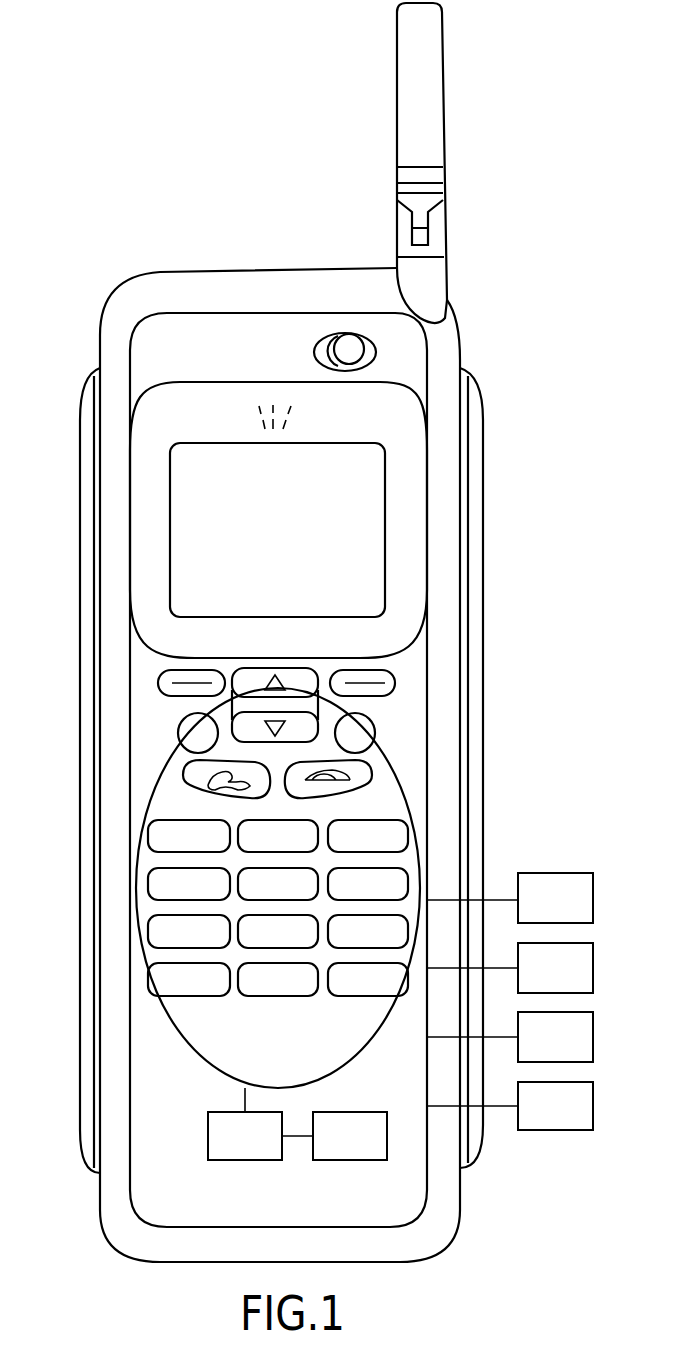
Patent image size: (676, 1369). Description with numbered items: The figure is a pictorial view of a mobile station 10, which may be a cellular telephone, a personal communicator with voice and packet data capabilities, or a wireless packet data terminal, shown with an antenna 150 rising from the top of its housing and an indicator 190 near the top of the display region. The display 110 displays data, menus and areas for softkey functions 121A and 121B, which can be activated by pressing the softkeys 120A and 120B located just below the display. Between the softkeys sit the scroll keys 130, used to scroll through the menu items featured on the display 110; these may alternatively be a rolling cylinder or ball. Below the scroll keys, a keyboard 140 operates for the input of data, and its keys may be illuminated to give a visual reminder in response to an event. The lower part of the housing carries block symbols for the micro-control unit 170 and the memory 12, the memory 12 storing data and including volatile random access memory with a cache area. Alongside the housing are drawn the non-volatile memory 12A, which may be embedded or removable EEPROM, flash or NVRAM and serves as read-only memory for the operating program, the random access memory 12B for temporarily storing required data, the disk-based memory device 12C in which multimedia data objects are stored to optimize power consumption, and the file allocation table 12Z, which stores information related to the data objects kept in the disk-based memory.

The mobile station 10 is at (130, 222).
The antenna 150 is at (272, 270).
The indicator 190 is at (288, 418).
The display 110 is at (170, 540).
The softkey function area 121A is at (186, 603).
The softkey function area 121B is at (372, 598).
The softkey 120A is at (160, 680).
The softkey 120B is at (390, 675).
The scroll keys 130 is at (232, 703).
The keyboard 140 is at (148, 857).
The micro-control unit 170 is at (266, 1150).
The memory 12 is at (364, 1150).
The non-volatile memory 12A is at (575, 911).
The random access memory 12B is at (575, 981).
The disk-based memory device 12C is at (575, 1050).
The File Allocation Table 12Z is at (575, 1119).